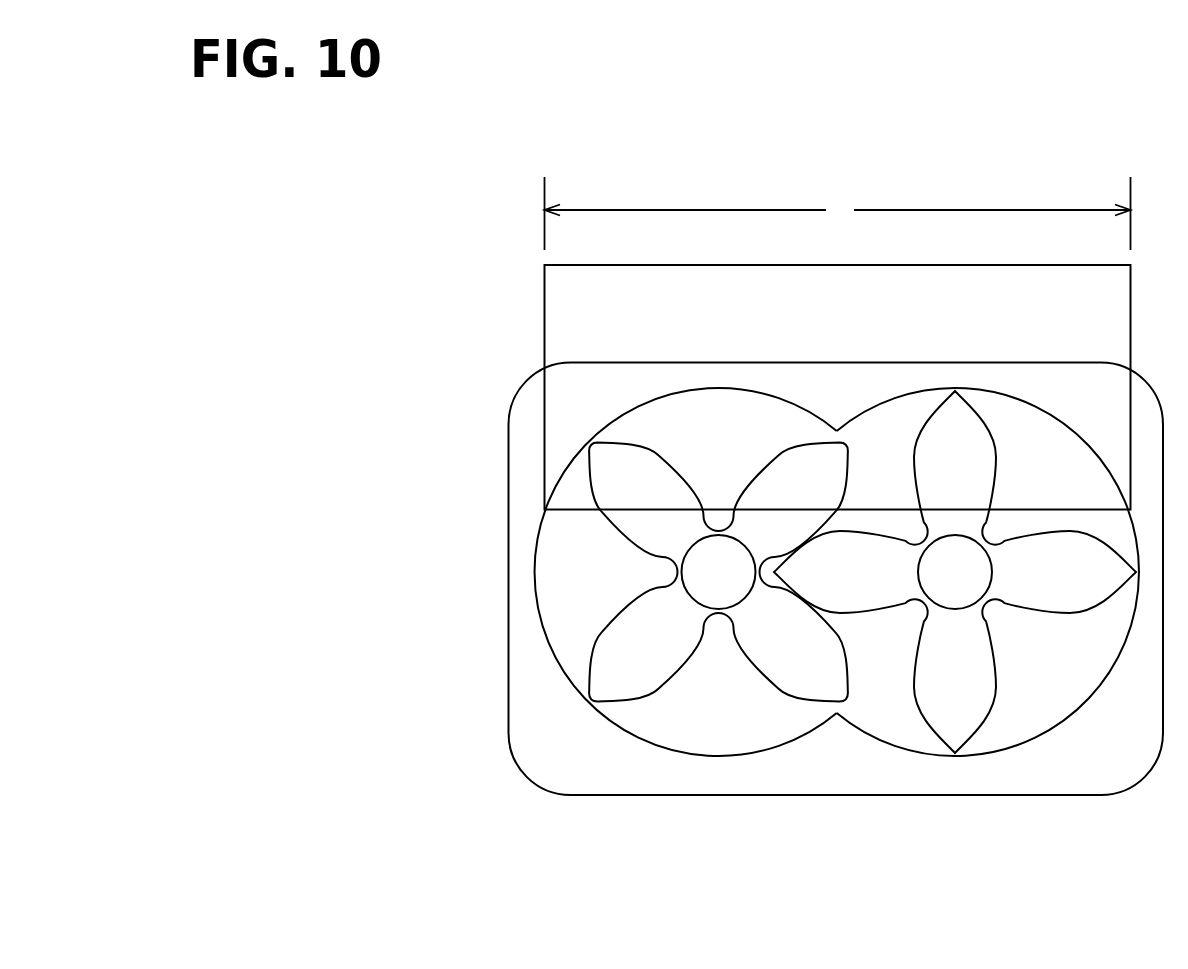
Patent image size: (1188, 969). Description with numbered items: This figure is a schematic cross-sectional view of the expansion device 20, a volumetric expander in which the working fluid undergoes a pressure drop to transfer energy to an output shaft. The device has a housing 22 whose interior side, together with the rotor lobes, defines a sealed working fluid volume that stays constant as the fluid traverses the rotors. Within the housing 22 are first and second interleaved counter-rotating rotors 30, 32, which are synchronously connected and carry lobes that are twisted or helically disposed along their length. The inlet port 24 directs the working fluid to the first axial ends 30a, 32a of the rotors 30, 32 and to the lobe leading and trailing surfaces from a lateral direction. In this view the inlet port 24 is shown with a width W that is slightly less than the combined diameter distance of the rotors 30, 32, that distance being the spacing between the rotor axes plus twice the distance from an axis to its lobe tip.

The expansion device 20 is at (396, 196).
The housing 22 is at (508, 488).
The inlet port 24 is at (544, 297).
The first rotor 30 is at (832, 702).
The first axial end of the first rotor 30a is at (621, 683).
The second rotor 32 is at (995, 685).
The first axial end of the second rotor 32a is at (953, 693).